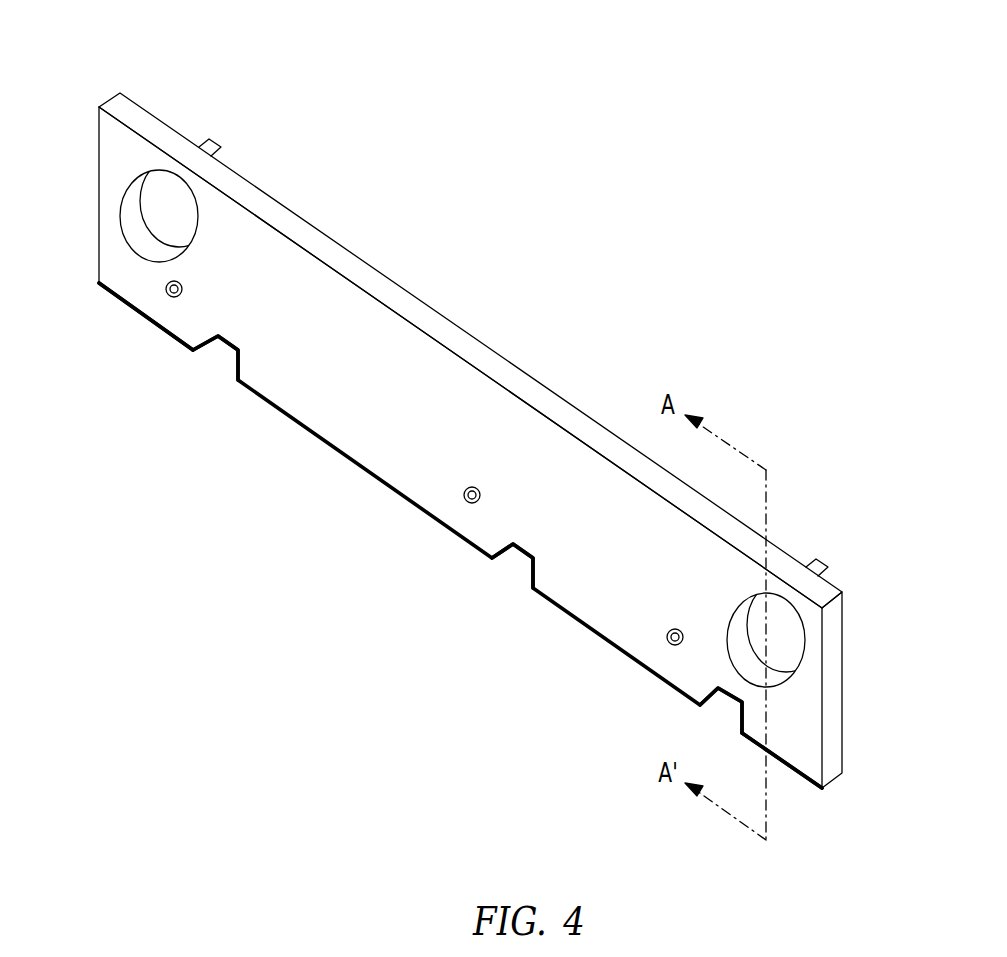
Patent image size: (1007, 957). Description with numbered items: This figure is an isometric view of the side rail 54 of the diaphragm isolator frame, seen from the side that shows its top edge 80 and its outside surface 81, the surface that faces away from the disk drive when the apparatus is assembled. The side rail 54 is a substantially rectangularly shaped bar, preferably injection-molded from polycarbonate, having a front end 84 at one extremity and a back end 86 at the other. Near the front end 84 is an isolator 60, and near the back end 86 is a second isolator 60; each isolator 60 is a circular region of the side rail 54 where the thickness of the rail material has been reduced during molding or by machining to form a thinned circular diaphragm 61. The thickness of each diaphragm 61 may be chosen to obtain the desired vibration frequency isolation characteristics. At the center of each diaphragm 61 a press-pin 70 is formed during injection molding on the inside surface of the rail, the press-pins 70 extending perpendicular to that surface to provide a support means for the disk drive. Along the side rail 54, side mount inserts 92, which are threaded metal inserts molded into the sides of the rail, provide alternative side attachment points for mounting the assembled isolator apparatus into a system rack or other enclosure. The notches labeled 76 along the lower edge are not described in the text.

The side rail 54 is at (292, 612).
The isolator 60 is at (137, 248).
The diaphragm 61 is at (148, 197).
The press-pin 70 is at (218, 140).
The notch 76 is at (235, 365).
The top edge 80 is at (441, 323).
The outside surface 81 is at (353, 440).
The front end 84 is at (100, 264).
The back end 86 is at (833, 767).
The side mount insert 92 is at (168, 296).